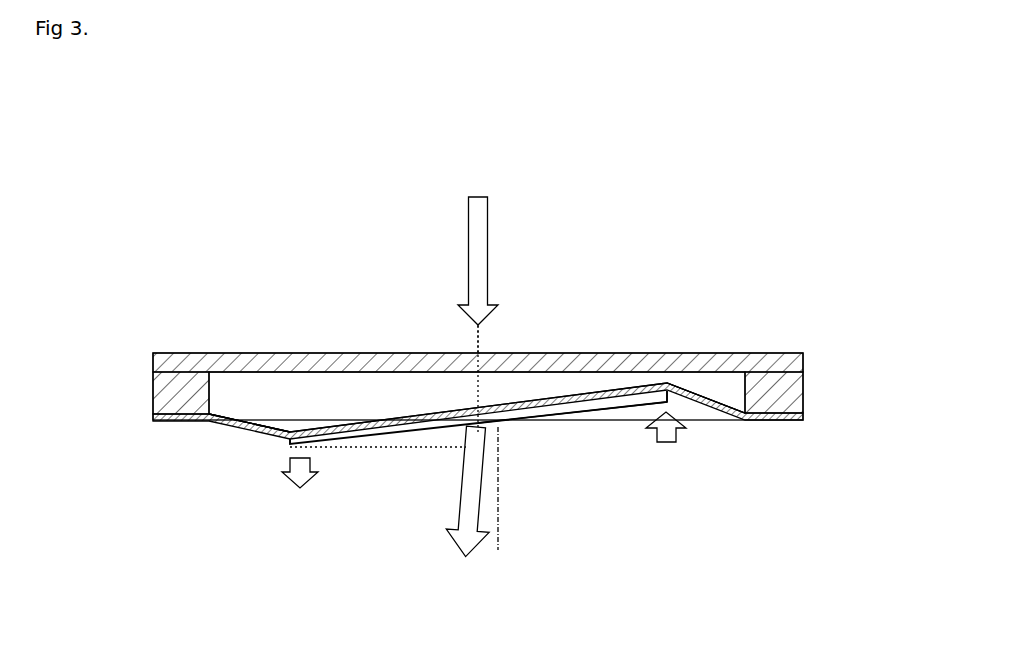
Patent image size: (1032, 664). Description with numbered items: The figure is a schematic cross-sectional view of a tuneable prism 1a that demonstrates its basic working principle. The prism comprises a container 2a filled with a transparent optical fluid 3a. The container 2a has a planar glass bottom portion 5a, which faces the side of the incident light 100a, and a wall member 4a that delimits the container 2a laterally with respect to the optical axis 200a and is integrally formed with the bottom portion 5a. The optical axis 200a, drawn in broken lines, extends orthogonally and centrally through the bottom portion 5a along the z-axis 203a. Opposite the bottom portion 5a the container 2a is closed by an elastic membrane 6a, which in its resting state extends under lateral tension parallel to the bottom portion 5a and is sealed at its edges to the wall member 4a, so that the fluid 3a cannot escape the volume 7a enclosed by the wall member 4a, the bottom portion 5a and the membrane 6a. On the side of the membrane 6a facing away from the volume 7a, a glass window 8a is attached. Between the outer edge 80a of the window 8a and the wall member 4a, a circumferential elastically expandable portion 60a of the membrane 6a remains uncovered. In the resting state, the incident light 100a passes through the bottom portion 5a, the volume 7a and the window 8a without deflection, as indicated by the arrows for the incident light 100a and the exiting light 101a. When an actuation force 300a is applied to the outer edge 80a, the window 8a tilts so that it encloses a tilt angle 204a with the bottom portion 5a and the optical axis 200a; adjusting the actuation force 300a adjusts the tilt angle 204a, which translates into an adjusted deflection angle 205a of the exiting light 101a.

The tuneable prism 1a is at (732, 167).
The container 2a is at (787, 352).
The transparent optical fluid 3a is at (320, 414).
The wall member 4a is at (172, 394).
The bottom portion 5a is at (681, 352).
The elastic membrane 6a is at (347, 434).
The volume 7a is at (342, 406).
The glass window 8a is at (553, 420).
The elastically expandable portion 60a is at (222, 427).
The outer edge 80a is at (290, 439).
The incident light 100a is at (483, 215).
The exiting light 101a is at (466, 558).
The optical axis 200a is at (481, 335).
The z-axis 203a is at (585, 315).
The tilt angle 204a is at (418, 444).
The deflection angle 205a is at (480, 525).
The actuation force 300a is at (281, 474).